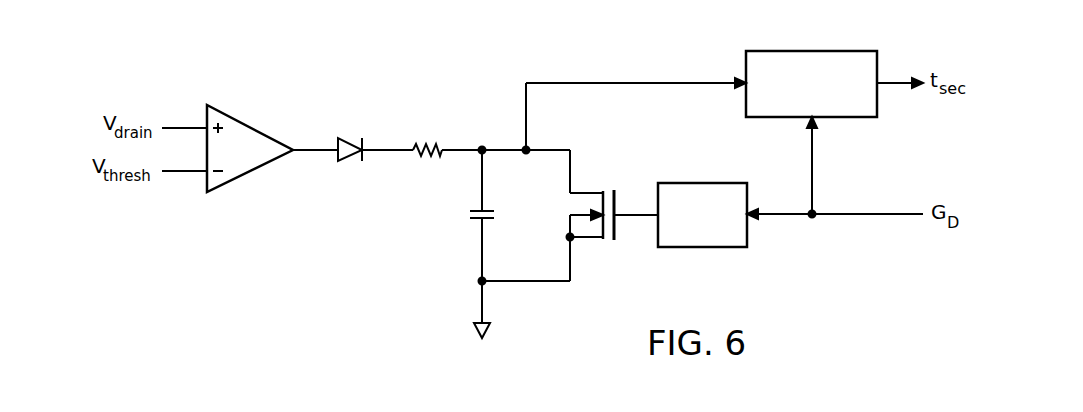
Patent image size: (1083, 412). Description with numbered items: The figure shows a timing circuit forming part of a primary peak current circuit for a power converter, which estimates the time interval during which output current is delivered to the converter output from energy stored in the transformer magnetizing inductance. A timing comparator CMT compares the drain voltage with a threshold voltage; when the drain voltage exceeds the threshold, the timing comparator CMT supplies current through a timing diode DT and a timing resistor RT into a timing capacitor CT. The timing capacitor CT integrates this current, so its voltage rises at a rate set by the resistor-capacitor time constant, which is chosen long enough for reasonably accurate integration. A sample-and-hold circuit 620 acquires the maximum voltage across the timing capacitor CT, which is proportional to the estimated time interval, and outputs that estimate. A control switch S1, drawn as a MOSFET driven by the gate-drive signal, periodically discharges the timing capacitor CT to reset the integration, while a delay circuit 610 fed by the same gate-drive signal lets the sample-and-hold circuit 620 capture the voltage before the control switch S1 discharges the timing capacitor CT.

The delay circuit 610 is at (702, 247).
The sample-and-hold circuit 620 is at (828, 51).
The control switch S1 is at (599, 215).
The timing capacitor CT is at (464, 236).
The timing resistor RT is at (491, 131).
The timing diode DT is at (369, 130).
The timing comparator CMT is at (250, 140).